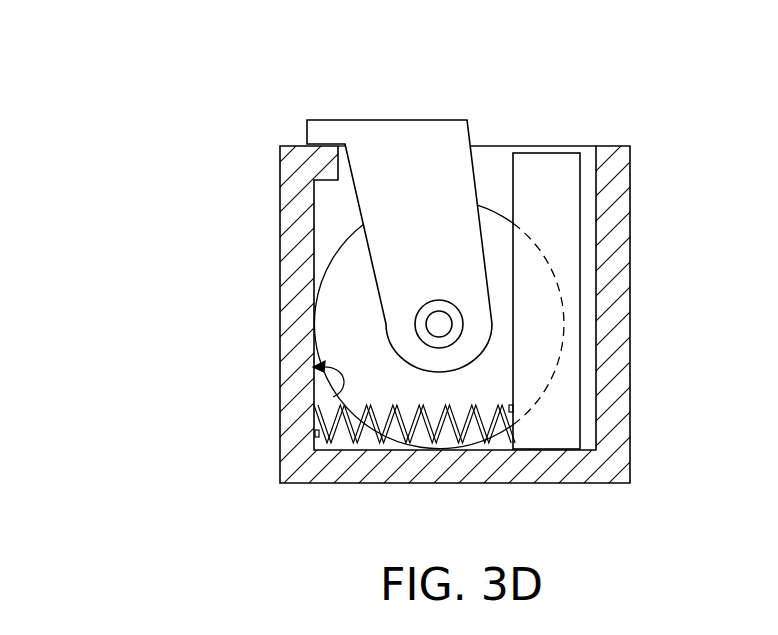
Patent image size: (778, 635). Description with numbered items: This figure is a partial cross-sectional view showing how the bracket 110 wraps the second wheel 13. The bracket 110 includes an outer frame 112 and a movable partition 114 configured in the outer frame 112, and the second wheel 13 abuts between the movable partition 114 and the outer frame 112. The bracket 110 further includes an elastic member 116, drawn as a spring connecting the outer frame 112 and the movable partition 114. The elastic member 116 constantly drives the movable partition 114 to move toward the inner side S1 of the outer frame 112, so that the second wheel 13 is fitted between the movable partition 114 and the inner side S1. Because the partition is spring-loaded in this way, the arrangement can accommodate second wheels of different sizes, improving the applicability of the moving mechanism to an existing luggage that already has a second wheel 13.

The bracket 110 is at (121, 15).
The outer frame 112 is at (617, 165).
The movable partition 114 is at (552, 175).
The elastic member 116 is at (410, 441).
The second wheel 13 is at (495, 227).
The inner side S1 is at (333, 397).